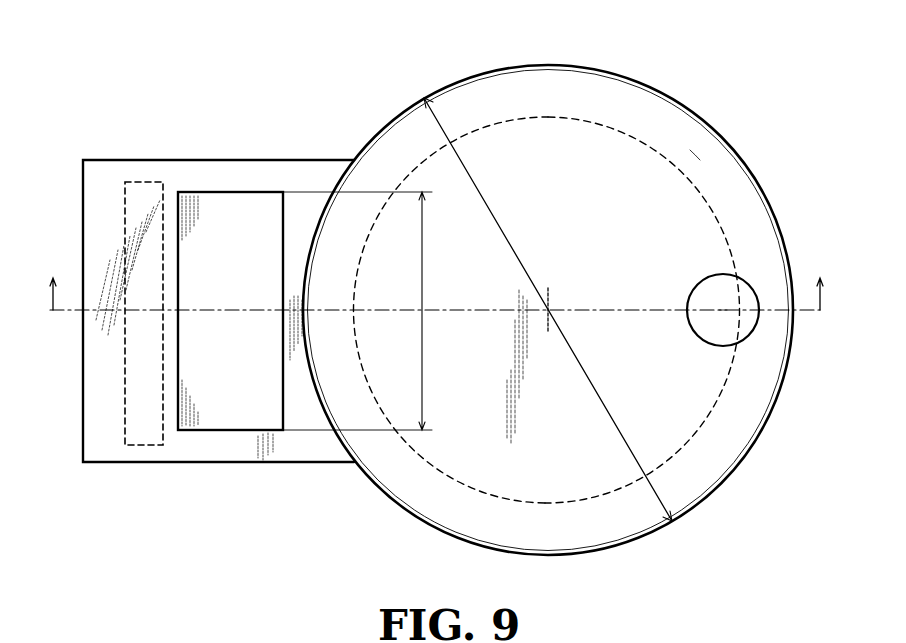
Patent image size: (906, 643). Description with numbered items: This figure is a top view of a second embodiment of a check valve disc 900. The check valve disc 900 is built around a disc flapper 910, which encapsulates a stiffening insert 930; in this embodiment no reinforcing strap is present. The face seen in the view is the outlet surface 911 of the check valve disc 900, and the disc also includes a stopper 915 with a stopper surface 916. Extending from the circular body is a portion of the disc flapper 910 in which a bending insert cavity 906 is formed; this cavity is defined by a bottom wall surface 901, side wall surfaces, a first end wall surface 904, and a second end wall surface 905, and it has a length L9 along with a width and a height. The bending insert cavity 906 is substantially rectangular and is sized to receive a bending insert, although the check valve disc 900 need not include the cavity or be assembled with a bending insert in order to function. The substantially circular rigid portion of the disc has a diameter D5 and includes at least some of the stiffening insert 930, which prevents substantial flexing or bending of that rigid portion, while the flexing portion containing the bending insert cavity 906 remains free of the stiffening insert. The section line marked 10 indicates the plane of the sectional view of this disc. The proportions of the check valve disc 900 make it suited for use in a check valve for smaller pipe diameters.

The check valve disc 900 is at (662, 92).
The disc flapper 910 is at (695, 153).
The outlet surface 911 is at (725, 207).
The stiffening insert 930 is at (548, 504).
The stopper 915 is at (693, 337).
The stopper surface 916 is at (722, 323).
The bottom wall surface 901 is at (240, 375).
The first end wall surface 904 is at (203, 428).
The second end wall surface 905 is at (201, 195).
The bending insert cavity 906 is at (262, 222).
The section line 10 is at (437, 280).
The length L9 is at (358, 311).
The diameter D5 is at (632, 434).